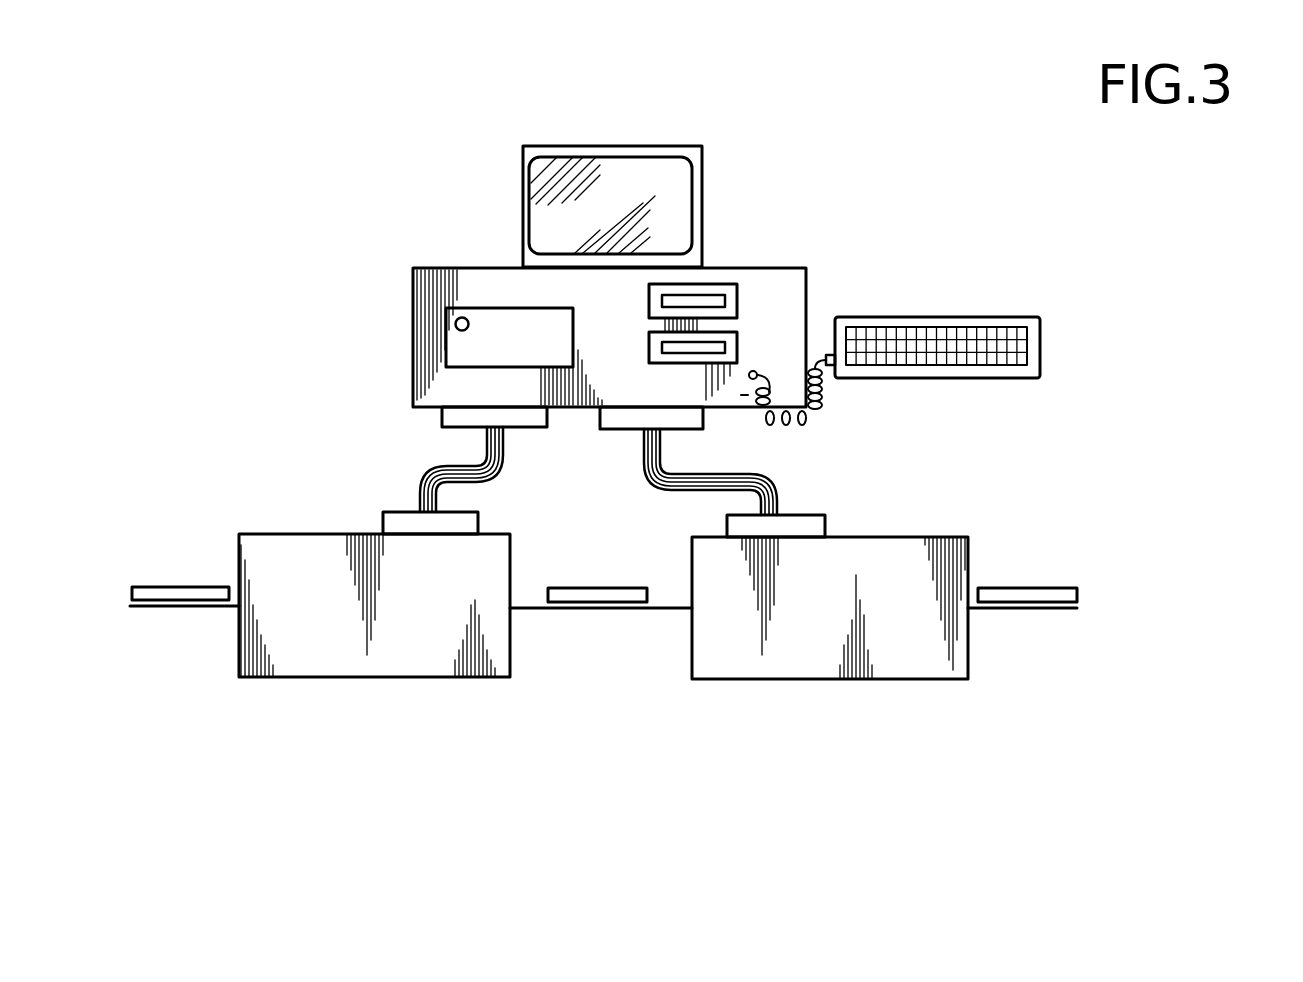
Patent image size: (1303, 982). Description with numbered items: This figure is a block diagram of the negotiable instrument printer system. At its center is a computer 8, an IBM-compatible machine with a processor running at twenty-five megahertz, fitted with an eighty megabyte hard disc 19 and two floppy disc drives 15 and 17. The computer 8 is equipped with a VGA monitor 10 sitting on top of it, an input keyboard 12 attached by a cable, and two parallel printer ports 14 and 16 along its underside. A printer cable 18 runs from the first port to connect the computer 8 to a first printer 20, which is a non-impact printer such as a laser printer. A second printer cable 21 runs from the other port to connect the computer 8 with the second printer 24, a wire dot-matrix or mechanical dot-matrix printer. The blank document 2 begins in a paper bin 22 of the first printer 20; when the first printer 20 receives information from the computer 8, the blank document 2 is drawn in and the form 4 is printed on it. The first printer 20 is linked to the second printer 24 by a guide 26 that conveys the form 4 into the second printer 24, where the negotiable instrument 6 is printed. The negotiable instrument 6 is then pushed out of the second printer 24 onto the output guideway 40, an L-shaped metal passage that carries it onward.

The blank document 2 is at (183, 586).
The form 4 is at (617, 586).
The negotiable instrument 6 is at (1012, 586).
The computer 8 is at (765, 267).
The VGA monitor 10 is at (657, 146).
The input keyboard 12 is at (985, 317).
The parallel printer port 14 is at (441, 420).
The floppy disc drive 15 is at (737, 292).
The parallel printer port 16 is at (703, 427).
The floppy disc drive 17 is at (737, 338).
The printer cable 18 is at (418, 490).
The hard disc 19 is at (447, 320).
The first printer 20 is at (382, 679).
The second printer cable 21 is at (781, 492).
The paper bin 22 is at (172, 610).
The second printer 24 is at (840, 683).
The guide 26 is at (548, 608).
The output guideway 40 is at (1045, 613).